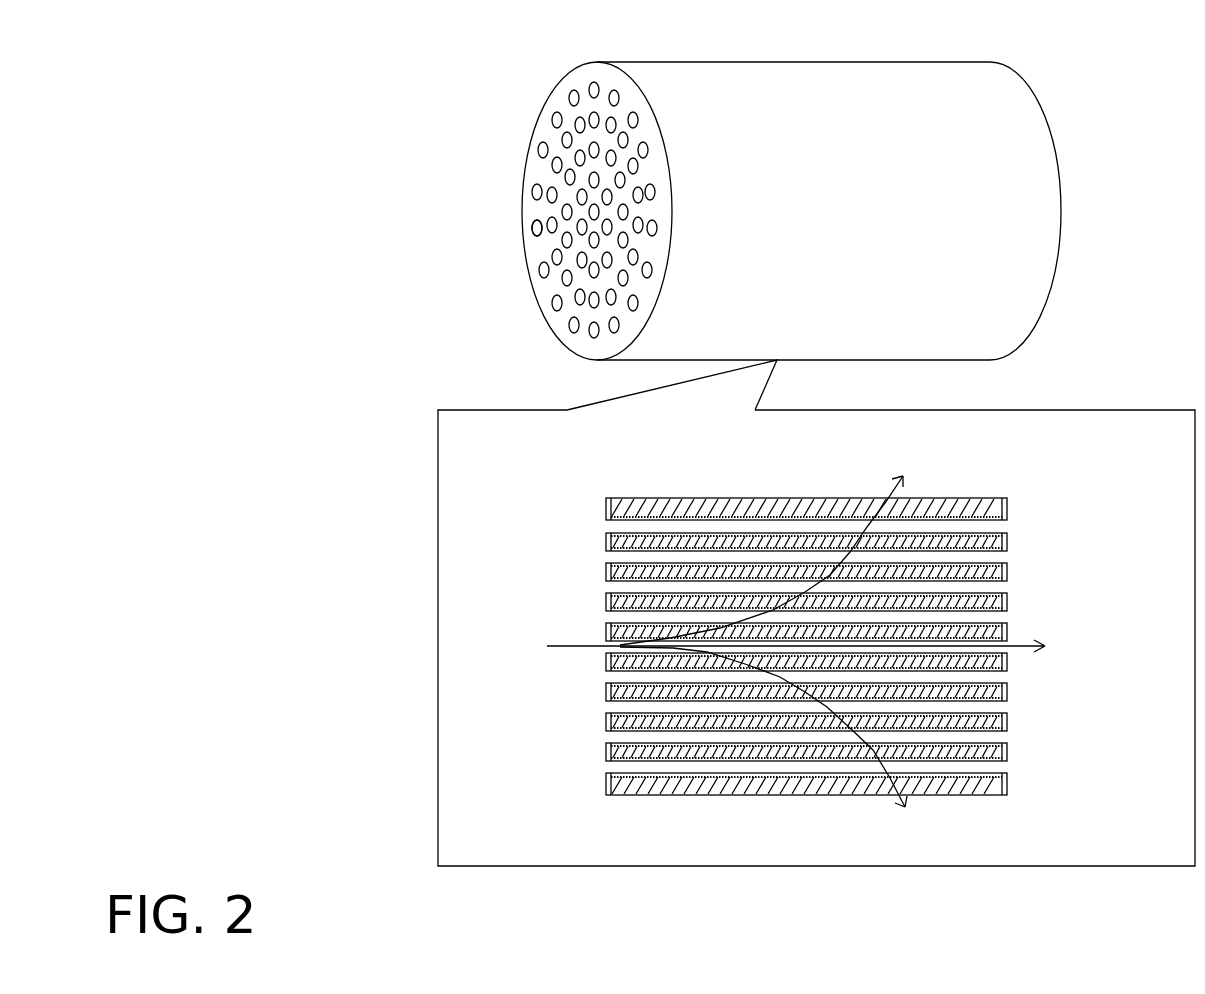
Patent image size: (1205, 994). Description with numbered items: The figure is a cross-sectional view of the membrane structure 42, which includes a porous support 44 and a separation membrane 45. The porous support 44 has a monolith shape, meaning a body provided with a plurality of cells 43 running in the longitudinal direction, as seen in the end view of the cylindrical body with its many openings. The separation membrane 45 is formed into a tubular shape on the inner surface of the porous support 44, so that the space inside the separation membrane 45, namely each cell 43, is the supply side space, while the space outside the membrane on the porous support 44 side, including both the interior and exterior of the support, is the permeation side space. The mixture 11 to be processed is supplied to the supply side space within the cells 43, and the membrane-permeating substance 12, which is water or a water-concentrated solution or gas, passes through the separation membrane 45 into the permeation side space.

The membrane structure 42 is at (1070, 48).
The cell 43 is at (527, 155).
The porous support 44 is at (543, 122).
The separation membrane 45 is at (537, 230).
The mixture 11 is at (793, 652).
The membrane-permeating substance 12 is at (788, 639).